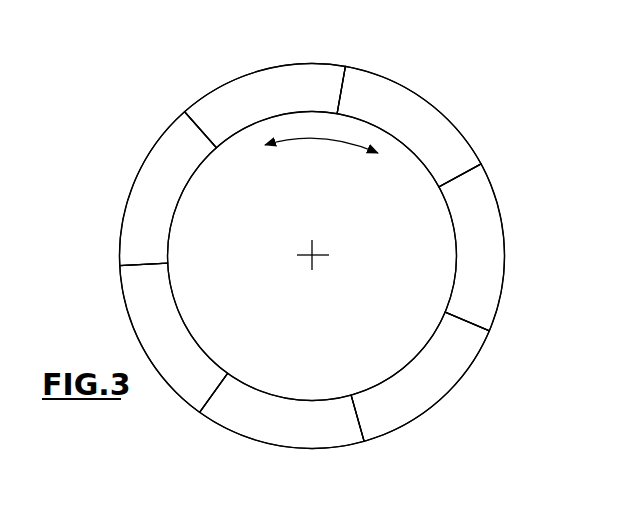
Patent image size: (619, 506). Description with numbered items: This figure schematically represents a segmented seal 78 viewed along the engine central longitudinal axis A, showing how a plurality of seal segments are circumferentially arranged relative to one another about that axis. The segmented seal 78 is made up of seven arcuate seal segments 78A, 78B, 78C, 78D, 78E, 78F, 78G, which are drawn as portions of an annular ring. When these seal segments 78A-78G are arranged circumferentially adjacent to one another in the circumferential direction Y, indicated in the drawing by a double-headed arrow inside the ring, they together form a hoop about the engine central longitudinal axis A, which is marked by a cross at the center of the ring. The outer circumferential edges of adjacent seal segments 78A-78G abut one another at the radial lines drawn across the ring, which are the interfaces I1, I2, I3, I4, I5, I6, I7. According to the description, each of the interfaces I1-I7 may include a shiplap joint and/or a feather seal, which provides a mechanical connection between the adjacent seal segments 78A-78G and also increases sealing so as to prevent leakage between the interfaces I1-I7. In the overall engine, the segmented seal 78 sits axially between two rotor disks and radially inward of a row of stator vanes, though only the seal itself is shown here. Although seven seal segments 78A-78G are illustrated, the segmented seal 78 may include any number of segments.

The segmented seal 78 is at (306, 60).
The arcuate seal segment 78A is at (245, 106).
The arcuate seal segment 78B is at (389, 132).
The arcuate seal segment 78C is at (456, 269).
The arcuate seal segment 78D is at (404, 394).
The arcuate seal segment 78E is at (263, 434).
The arcuate seal segment 78F is at (147, 349).
The arcuate seal segment 78G is at (139, 197).
The interface I1 is at (348, 63).
The interface I2 is at (486, 160).
The interface I3 is at (494, 332).
The interface I4 is at (368, 445).
The interface I5 is at (201, 418).
The interface I6 is at (117, 265).
The interface I7 is at (183, 107).
The engine central longitudinal axis A is at (318, 253).
The circumferential direction Y is at (336, 142).